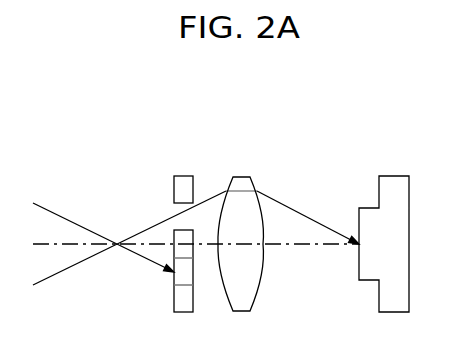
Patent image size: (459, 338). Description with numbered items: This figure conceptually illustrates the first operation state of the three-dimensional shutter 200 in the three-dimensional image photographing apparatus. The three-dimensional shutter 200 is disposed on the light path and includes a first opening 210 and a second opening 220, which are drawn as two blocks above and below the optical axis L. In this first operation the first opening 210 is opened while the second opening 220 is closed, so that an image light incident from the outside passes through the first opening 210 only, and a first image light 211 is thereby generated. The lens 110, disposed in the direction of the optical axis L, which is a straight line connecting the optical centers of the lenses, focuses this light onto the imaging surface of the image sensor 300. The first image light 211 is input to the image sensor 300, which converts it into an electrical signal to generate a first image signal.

The optical axis L is at (186, 245).
The lens 110 is at (241, 176).
The 3D shutter 200 is at (155, 226).
The first opening 210 is at (181, 208).
The first image light 211 is at (305, 211).
The second opening 220 is at (181, 277).
The image sensor 300 is at (396, 176).